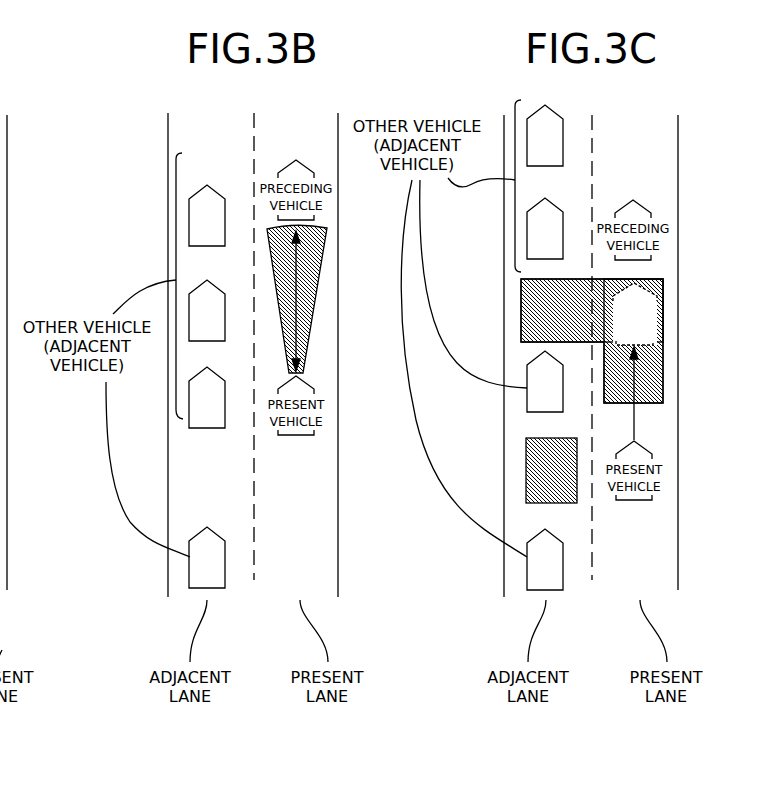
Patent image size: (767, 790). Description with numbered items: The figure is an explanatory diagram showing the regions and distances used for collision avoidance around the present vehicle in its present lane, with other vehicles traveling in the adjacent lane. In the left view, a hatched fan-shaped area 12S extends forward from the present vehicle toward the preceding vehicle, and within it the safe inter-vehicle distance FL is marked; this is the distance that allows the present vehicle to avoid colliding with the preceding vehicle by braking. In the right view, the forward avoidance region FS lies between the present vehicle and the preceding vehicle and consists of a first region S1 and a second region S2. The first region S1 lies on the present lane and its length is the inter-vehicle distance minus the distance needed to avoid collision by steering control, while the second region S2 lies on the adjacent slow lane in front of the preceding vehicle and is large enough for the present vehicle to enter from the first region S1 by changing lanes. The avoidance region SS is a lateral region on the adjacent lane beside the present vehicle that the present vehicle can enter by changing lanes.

In FIG. 3B, the detection area of sensor 12S is at (322, 229).
In FIG. 3B, the safe inter-vehicle distance FL is at (300, 291).
In FIG. 3C, the first region S1 is at (663, 368).
In FIG. 3C, the second region S2 is at (521, 305).
In FIG. 3C, the avoidance region SS is at (526, 470).
In FIG. 3C, the forward avoidance region FS is at (604, 341).